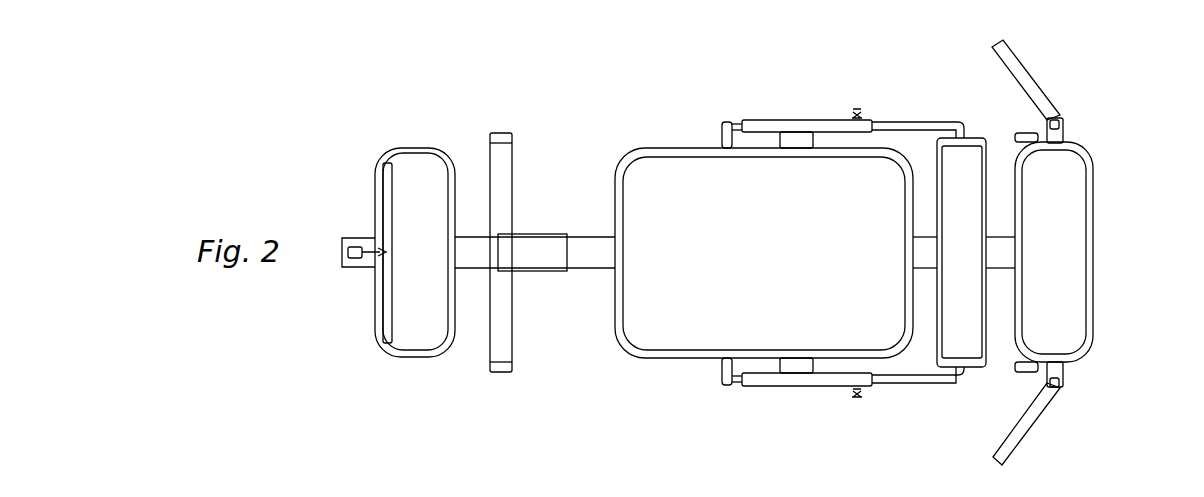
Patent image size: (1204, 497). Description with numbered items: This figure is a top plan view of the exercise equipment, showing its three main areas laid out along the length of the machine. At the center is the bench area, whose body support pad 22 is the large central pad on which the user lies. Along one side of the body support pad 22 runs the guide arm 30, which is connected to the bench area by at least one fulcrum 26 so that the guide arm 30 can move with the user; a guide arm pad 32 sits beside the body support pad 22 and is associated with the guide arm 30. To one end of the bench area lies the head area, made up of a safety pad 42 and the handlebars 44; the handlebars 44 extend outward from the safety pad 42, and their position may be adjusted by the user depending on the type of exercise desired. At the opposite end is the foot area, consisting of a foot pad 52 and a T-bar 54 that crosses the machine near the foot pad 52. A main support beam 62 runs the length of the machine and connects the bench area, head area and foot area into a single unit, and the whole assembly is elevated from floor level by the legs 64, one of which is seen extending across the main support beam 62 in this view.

The body support pad 22 is at (678, 170).
The fulcrum 26 is at (802, 132).
The guide arm 30 is at (835, 113).
The guide arm pad 32 is at (970, 162).
The safety pad 42 is at (1093, 242).
The handlebars 44 is at (1045, 80).
The foot pad 52 is at (422, 163).
The T-bar 54 is at (387, 197).
The main support beam 62 is at (552, 243).
The legs 64 is at (505, 330).